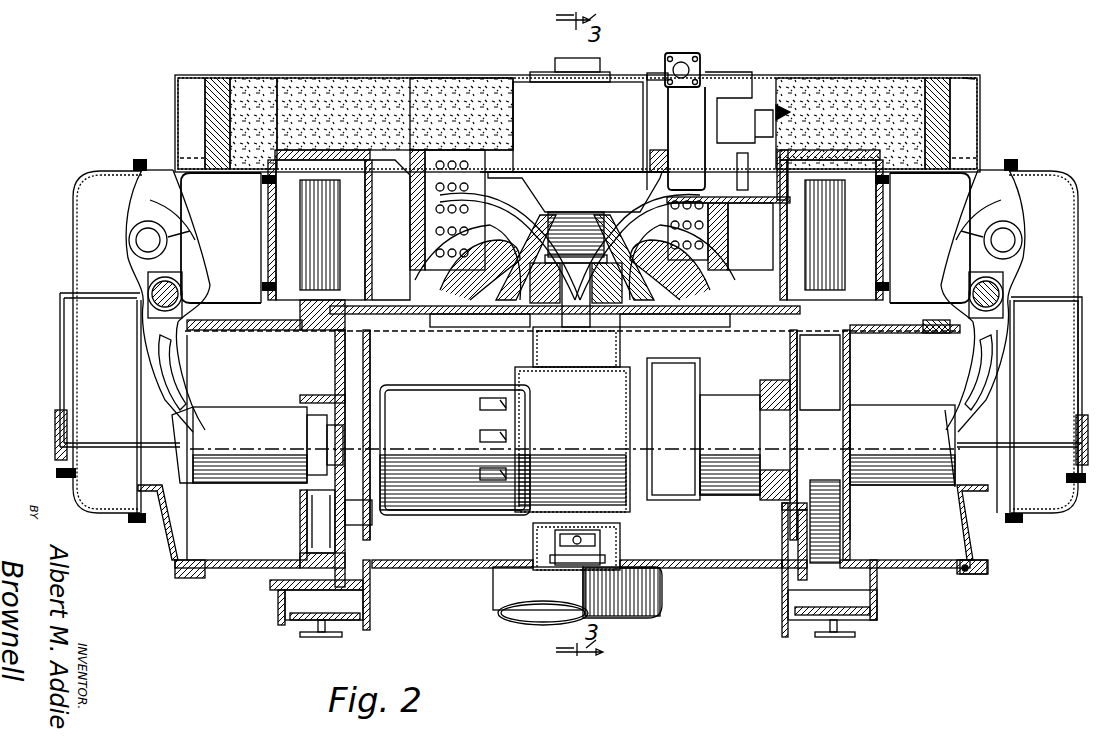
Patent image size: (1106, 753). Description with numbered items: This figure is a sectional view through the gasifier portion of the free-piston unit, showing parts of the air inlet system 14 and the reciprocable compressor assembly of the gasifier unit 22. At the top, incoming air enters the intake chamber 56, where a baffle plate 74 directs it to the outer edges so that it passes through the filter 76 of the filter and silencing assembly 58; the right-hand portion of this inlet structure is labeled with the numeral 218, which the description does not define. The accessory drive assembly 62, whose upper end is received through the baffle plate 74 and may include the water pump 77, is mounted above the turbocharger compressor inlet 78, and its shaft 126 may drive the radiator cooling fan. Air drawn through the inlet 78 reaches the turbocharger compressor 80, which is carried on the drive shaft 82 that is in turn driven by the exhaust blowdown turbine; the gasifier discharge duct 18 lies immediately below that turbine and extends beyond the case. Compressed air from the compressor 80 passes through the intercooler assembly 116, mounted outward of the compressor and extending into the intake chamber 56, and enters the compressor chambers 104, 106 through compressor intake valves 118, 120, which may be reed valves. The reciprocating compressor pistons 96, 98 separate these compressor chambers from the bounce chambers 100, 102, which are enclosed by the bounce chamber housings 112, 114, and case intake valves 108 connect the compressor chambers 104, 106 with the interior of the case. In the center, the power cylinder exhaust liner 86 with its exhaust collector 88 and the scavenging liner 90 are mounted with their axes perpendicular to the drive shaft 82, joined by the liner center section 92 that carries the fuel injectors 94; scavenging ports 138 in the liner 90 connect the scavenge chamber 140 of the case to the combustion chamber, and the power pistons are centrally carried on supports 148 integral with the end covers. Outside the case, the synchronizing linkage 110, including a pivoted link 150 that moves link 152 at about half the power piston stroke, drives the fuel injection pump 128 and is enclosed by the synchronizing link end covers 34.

The air inlet system 14 is at (972, 69).
The gasifier discharge duct 18 is at (645, 600).
The gasifier unit 22 is at (103, 522).
The synchronizing link end covers 34 is at (73, 212).
The intake chamber 56 is at (192, 80).
The filter and silencing assembly 58 is at (200, 112).
The accessory drive assembly 62 is at (512, 118).
The baffle plate 74 is at (318, 76).
The filter 76 is at (945, 115).
The water pump 77 is at (700, 56).
The turbocharger compressor inlet 78 is at (546, 226).
The turbocharger compressor 80 is at (484, 302).
The drive shaft 82 is at (576, 315).
The power cylinder exhaust liner 86 is at (746, 394).
The exhaust collector 88 is at (680, 364).
The scavenging liner 90 is at (448, 398).
The liner center section 92 is at (524, 533).
The fuel injectors 94 is at (582, 540).
The reciprocating compressor piston 96 is at (306, 345).
The reciprocating compressor piston 98 is at (830, 370).
The bounce chamber 100 is at (217, 556).
The bounce chamber 102 is at (893, 557).
The compressor chamber 104 is at (338, 532).
The compressor chamber 106 is at (802, 532).
The case intake valves 108 is at (790, 345).
The synchronizing linkage 110 is at (134, 268).
The bounce chamber housing 112 is at (258, 566).
The bounce chamber housing 114 is at (933, 570).
The intercooler assembly 116 is at (322, 158).
The compressor intake valve 118 is at (364, 607).
The compressor intake valve 120 is at (812, 583).
The shaft 126 is at (568, 60).
The fuel injection pump 128 is at (575, 220).
The scavenging ports 138 is at (482, 434).
The scavenge chamber 140 is at (418, 569).
The supports 148 is at (240, 416).
The pivoted link 150 is at (160, 365).
The link 152 is at (172, 236).
The insulation 218 is at (776, 108).